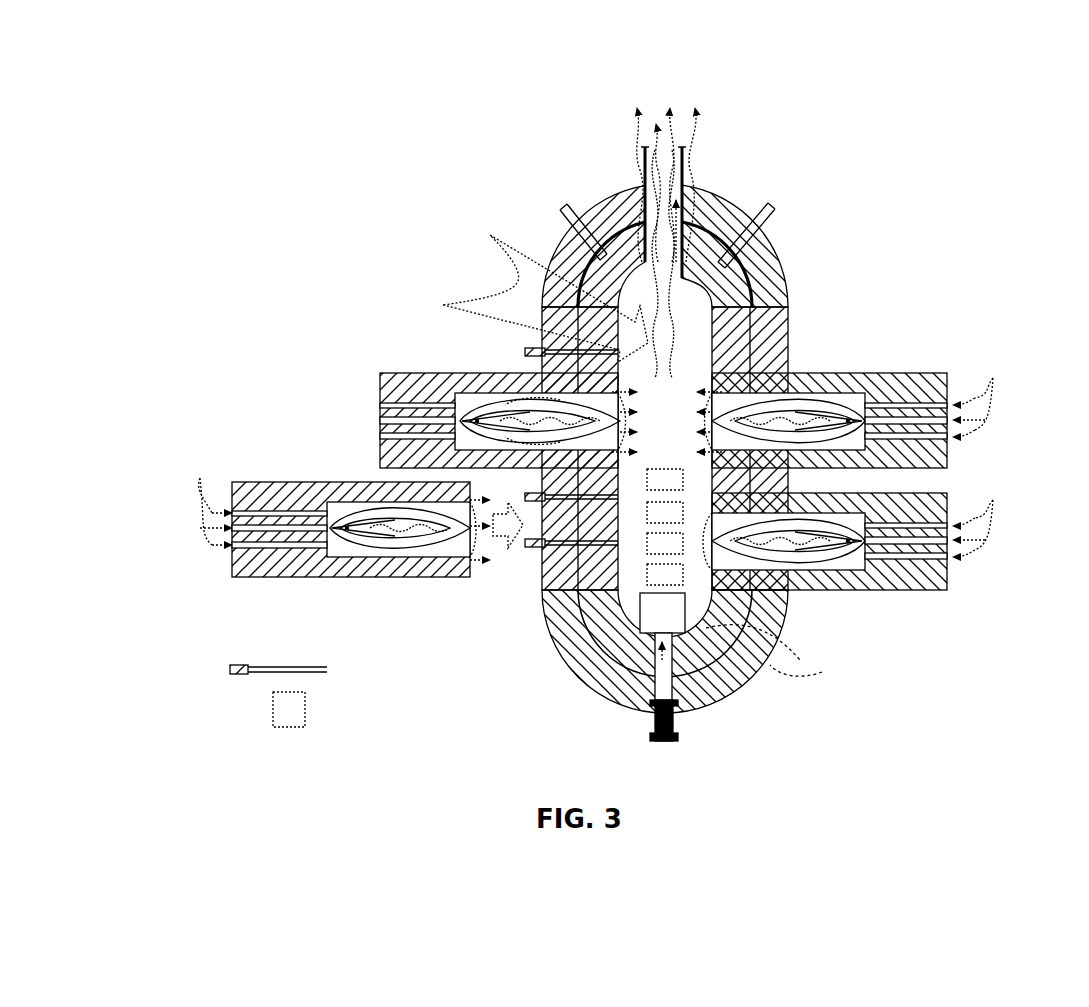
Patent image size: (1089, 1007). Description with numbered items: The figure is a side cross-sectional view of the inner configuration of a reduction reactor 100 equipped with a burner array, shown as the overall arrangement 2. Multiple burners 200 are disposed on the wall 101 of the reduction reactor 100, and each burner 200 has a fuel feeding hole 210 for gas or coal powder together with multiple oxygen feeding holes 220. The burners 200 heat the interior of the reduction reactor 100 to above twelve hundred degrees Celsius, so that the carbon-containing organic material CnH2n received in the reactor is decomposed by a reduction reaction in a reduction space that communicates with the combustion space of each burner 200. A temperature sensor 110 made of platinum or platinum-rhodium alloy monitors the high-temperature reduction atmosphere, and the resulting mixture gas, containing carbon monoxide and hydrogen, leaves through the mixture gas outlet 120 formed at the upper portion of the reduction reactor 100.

The synthesis gas producing apparatus 2 is at (588, 407).
The reduction reactor 100 is at (669, 474).
The wall 101 is at (613, 690).
The temperature sensor 110 is at (523, 352).
The mixture gas outlet 120 is at (643, 168).
The burner 200 is at (588, 470).
The fuel feeding hole 210 is at (376, 421).
The oxygen feeding holes 220 is at (376, 437).